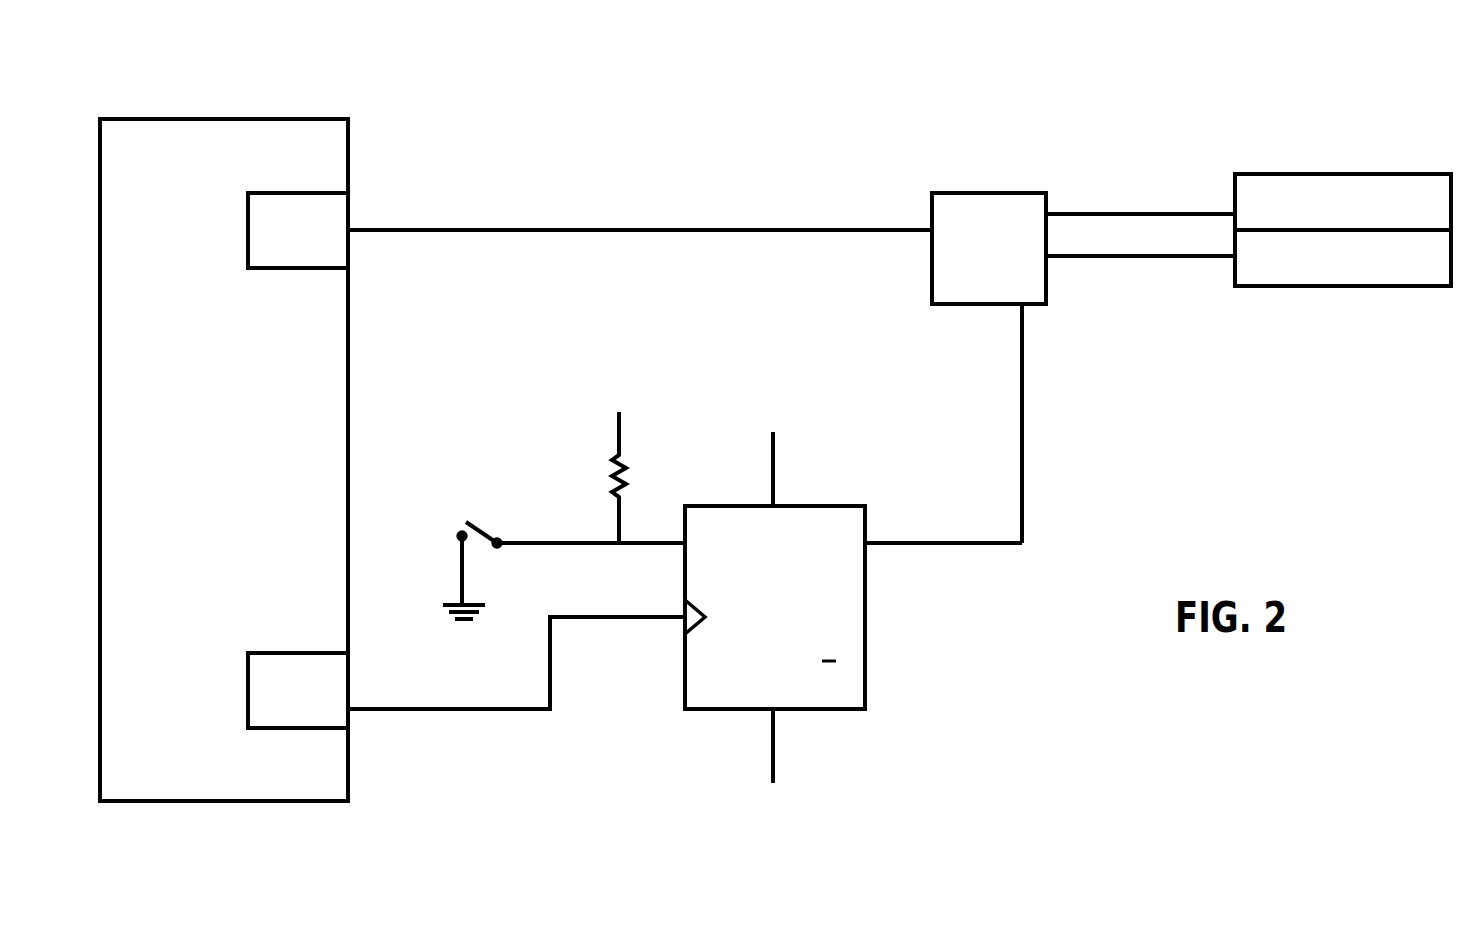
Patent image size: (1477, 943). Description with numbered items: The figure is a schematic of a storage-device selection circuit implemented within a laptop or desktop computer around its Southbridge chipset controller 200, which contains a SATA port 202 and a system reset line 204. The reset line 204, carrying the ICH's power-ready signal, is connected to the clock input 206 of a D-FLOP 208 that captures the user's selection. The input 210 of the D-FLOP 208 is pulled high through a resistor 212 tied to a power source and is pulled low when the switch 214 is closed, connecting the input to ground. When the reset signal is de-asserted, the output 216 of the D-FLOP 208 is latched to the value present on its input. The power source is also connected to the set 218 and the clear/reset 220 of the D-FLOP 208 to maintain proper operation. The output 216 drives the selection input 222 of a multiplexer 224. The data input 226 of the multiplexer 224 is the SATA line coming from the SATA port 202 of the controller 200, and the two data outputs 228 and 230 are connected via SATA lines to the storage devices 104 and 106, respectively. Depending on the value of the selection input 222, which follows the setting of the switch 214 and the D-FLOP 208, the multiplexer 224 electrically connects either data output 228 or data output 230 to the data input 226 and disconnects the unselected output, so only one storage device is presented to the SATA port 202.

The storage device 104 is at (1327, 173).
The storage device 106 is at (1320, 287).
The chipset controller 200 is at (213, 119).
The SATA port 202 is at (349, 210).
The reset line 204 is at (337, 708).
The clock input 206 is at (685, 623).
The D-FLOP 208 is at (868, 620).
The input 210 is at (683, 552).
The resistor 212 is at (625, 452).
The switch 214 is at (488, 525).
The output 216 is at (868, 533).
The set 218 is at (775, 462).
The clear/reset 220 is at (778, 712).
The selection input 222 is at (1033, 307).
The multiplexer 224 is at (978, 192).
The data input 226 is at (930, 230).
The data output 228 is at (1047, 210).
The data output 230 is at (1047, 257).